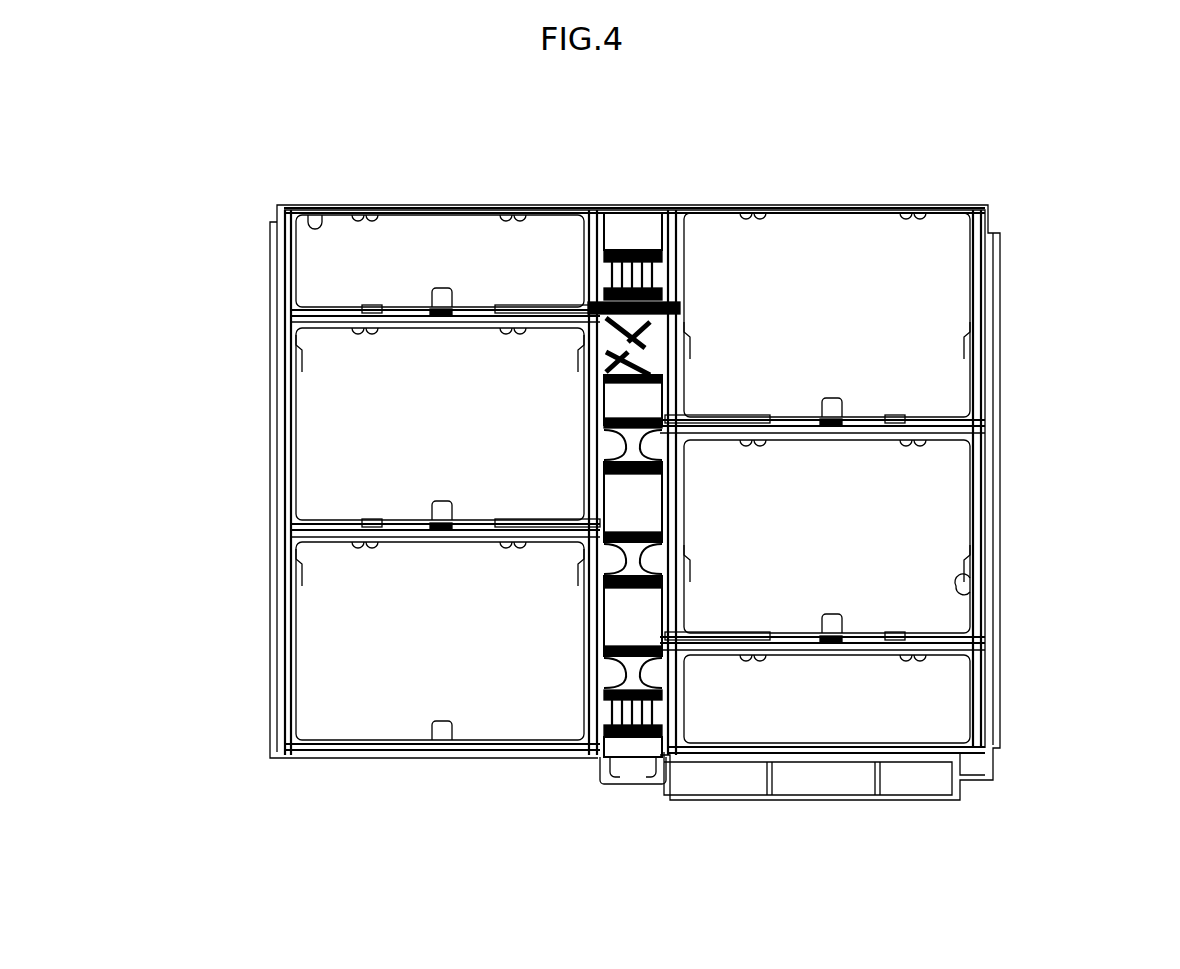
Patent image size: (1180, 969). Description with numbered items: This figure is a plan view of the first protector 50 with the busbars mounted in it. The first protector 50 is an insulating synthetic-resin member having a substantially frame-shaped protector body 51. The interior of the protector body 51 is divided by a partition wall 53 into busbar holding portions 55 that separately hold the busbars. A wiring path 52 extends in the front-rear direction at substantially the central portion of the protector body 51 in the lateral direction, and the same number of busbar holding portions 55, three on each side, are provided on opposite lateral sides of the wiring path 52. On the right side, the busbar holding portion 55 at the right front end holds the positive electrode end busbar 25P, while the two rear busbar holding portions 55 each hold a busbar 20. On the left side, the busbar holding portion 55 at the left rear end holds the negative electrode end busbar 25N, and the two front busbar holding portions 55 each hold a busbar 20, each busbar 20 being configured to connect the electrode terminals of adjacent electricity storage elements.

The busbar 20 is at (948, 480).
The negative electrode end busbar 25N is at (440, 240).
The positive electrode end busbar 25P is at (950, 712).
The first protector 50 is at (1022, 268).
The protector body 51 is at (988, 370).
The wiring path 52 is at (632, 232).
The partition wall 53 is at (318, 322).
The busbar holding portion 55 is at (317, 222).